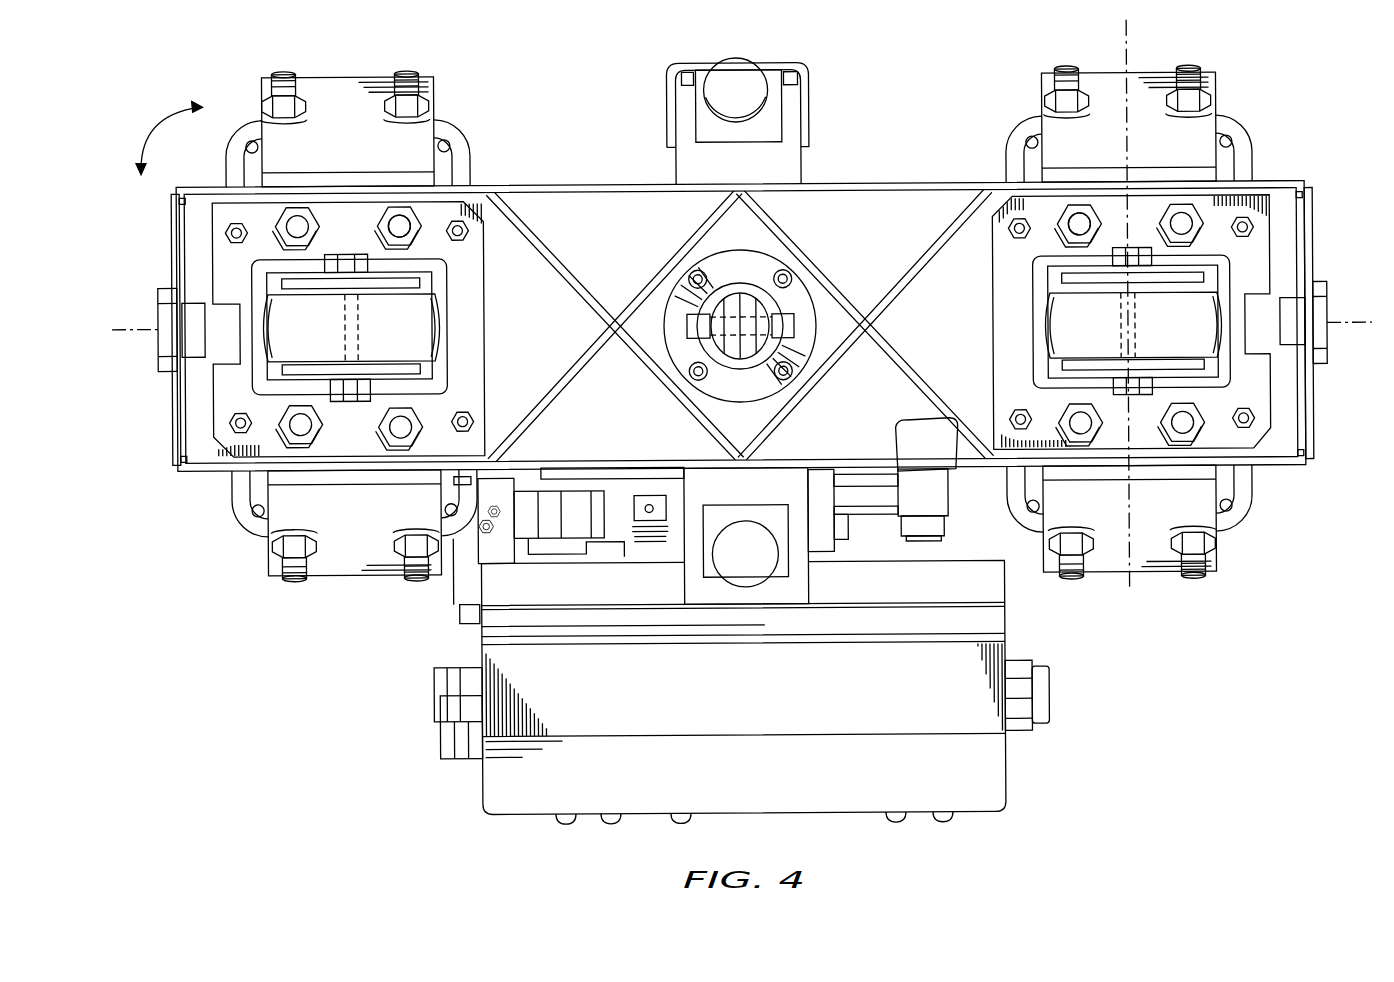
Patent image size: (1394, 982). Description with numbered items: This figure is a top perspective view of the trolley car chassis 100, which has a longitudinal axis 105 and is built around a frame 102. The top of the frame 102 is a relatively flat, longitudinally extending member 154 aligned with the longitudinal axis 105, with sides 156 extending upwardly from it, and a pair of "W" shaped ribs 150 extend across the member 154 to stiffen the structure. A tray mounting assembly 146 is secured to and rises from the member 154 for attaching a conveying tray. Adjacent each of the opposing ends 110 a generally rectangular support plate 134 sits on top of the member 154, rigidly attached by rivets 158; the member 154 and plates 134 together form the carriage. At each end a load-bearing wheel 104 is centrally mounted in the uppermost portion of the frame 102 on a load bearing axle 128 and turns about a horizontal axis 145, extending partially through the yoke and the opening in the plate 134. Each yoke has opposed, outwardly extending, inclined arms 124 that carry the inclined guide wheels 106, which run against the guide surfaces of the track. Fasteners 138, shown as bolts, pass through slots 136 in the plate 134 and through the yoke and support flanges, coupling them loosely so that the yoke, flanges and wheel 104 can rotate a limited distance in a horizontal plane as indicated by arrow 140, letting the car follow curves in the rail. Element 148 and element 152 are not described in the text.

The trolley car chassis 100 is at (210, 68).
The frame 102 is at (1283, 185).
The load-bearing wheel 104 is at (452, 329).
The longitudinal axis 105 is at (1350, 322).
The guide wheel 106 is at (437, 111).
The opposing ends 110 is at (171, 203).
The inclined arms 124 is at (323, 74).
The load bearing axle 128 is at (337, 315).
The support plate 134 is at (478, 368).
The slots 136 is at (384, 218).
The fasteners 138 is at (396, 245).
The arrow 140 is at (165, 105).
The horizontal axis 145 is at (1127, 48).
The tray mounting assembly 146 is at (803, 288).
The actuator housing 148 is at (832, 807).
The "W" shaped ribs 150 is at (551, 258).
The limit switch 152 is at (947, 499).
The longitudinally extending member 154 is at (886, 239).
The sides 156 is at (568, 182).
The rivets 158 is at (1247, 427).